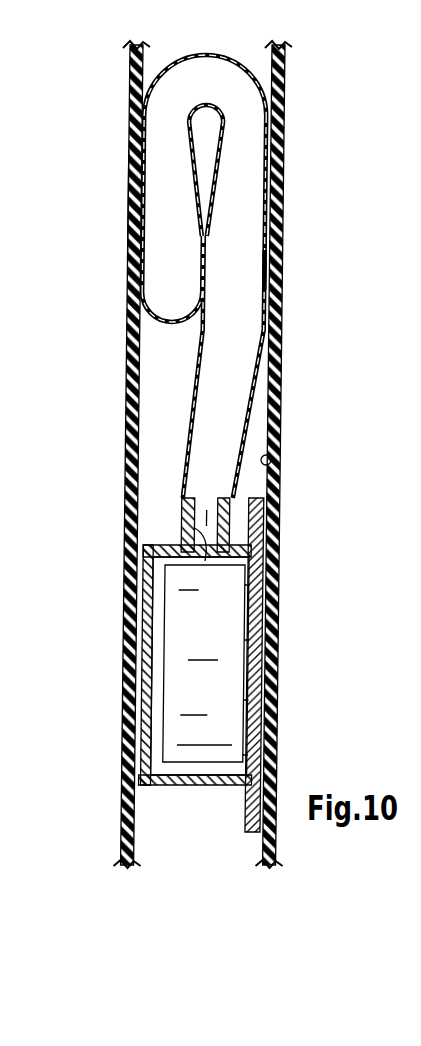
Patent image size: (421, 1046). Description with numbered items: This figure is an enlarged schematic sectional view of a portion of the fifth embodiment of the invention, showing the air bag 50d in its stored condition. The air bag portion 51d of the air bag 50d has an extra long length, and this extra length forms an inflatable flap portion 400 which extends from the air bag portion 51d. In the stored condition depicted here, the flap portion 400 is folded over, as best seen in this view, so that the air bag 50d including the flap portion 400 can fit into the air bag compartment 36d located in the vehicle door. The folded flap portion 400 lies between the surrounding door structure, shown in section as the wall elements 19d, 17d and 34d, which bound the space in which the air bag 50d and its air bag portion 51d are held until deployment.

The outer tube wall 19d is at (130, 58).
The outer tube wall (right side) 17d is at (285, 134).
The tube wall section 34d is at (130, 203).
The inflatable flap portion 400 is at (175, 203).
The air bag portion 51d is at (238, 181).
The air bag 50d is at (268, 270).
The air bag compartment 36d is at (272, 457).